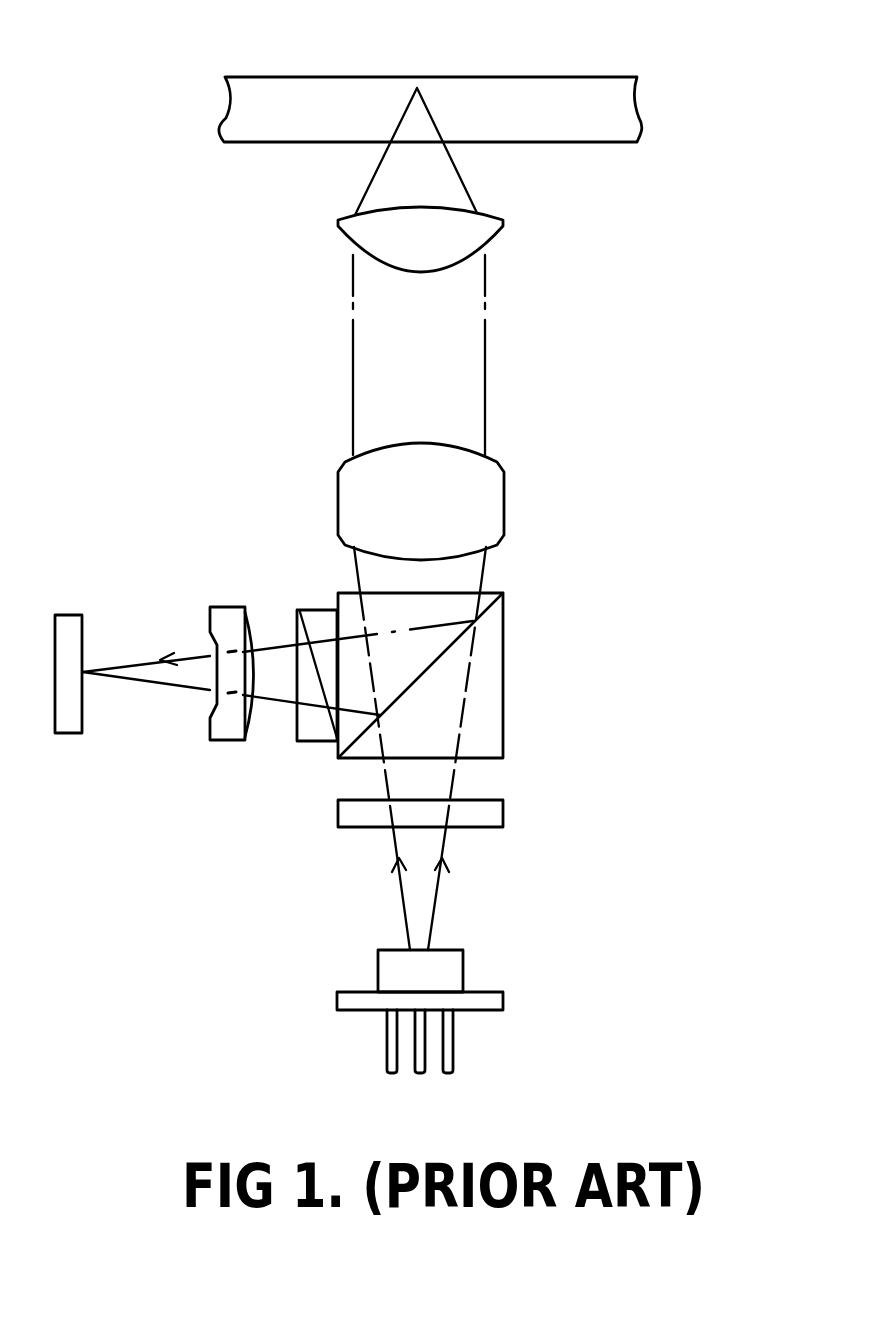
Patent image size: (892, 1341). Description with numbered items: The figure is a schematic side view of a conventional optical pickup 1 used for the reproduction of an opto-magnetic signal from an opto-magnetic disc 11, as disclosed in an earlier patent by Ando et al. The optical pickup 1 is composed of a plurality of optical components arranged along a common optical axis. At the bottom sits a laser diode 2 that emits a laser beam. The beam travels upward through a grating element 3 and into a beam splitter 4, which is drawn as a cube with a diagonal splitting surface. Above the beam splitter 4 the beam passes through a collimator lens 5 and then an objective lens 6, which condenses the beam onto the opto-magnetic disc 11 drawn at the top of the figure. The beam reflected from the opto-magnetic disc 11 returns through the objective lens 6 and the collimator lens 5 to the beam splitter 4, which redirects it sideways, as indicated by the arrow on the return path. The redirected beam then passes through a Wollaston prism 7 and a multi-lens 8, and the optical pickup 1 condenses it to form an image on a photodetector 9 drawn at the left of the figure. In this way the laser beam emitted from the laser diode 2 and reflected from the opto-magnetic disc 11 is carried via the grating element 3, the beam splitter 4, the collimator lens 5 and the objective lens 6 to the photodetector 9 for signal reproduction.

The optical pickup 1 is at (791, 1078).
The laser diode 2 is at (505, 996).
The grating element 3 is at (506, 810).
The beam splitter 4 is at (506, 690).
The collimator lens 5 is at (505, 483).
The objective lens 6 is at (504, 226).
The Wollaston prism 7 is at (318, 607).
The multi-lens 8 is at (228, 607).
The photodetector 9 is at (73, 613).
The opto-magnetic disc 11 is at (627, 77).